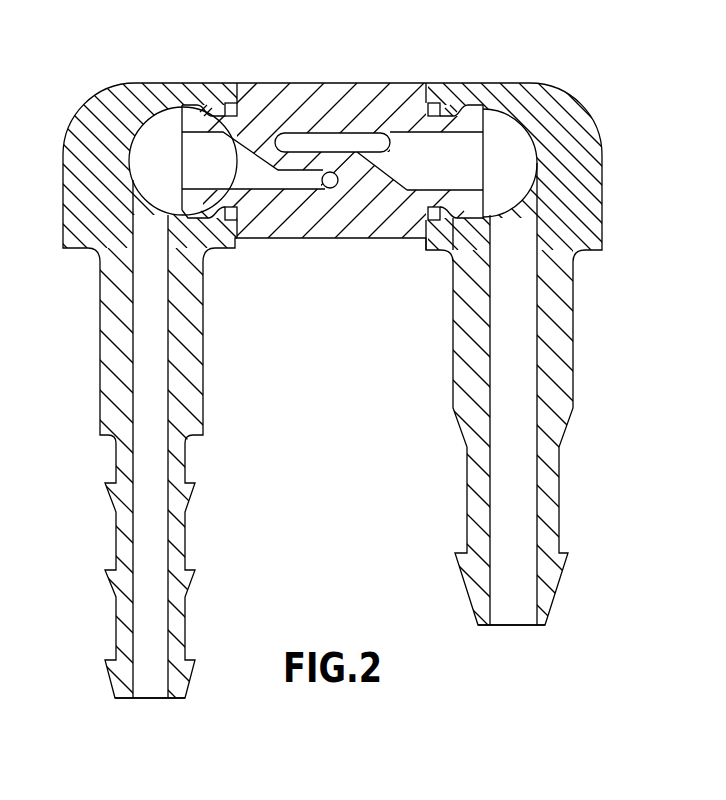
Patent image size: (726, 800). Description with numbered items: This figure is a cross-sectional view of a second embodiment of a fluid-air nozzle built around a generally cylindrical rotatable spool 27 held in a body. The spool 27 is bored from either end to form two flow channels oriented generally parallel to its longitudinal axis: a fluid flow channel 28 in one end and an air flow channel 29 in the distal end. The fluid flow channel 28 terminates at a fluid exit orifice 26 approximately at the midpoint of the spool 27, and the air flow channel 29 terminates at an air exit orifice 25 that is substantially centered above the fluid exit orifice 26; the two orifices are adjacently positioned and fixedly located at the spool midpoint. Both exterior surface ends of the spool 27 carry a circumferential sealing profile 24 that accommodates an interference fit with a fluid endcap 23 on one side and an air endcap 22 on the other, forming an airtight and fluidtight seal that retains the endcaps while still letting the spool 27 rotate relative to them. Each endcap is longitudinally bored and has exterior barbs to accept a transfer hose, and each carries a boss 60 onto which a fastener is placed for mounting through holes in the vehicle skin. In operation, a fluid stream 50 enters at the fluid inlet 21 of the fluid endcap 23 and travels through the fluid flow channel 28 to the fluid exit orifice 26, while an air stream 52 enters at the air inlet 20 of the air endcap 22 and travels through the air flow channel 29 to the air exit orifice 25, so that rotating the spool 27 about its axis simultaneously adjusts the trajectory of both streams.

The air inlet 20 is at (525, 628).
The fluid inlet 21 is at (140, 699).
The air endcap 22 is at (603, 177).
The fluid endcap 23 is at (64, 167).
The circumferential sealing profile 24 is at (198, 104).
The air exit orifice 25 is at (332, 143).
The fluid exit orifice 26 is at (333, 188).
The rotatable spool 27 is at (365, 83).
The fluid flow channel 28 is at (203, 164).
The air flow channel 29 is at (472, 153).
The fluid stream 50 is at (149, 698).
The air stream 52 is at (511, 625).
The boss 60 is at (203, 342).